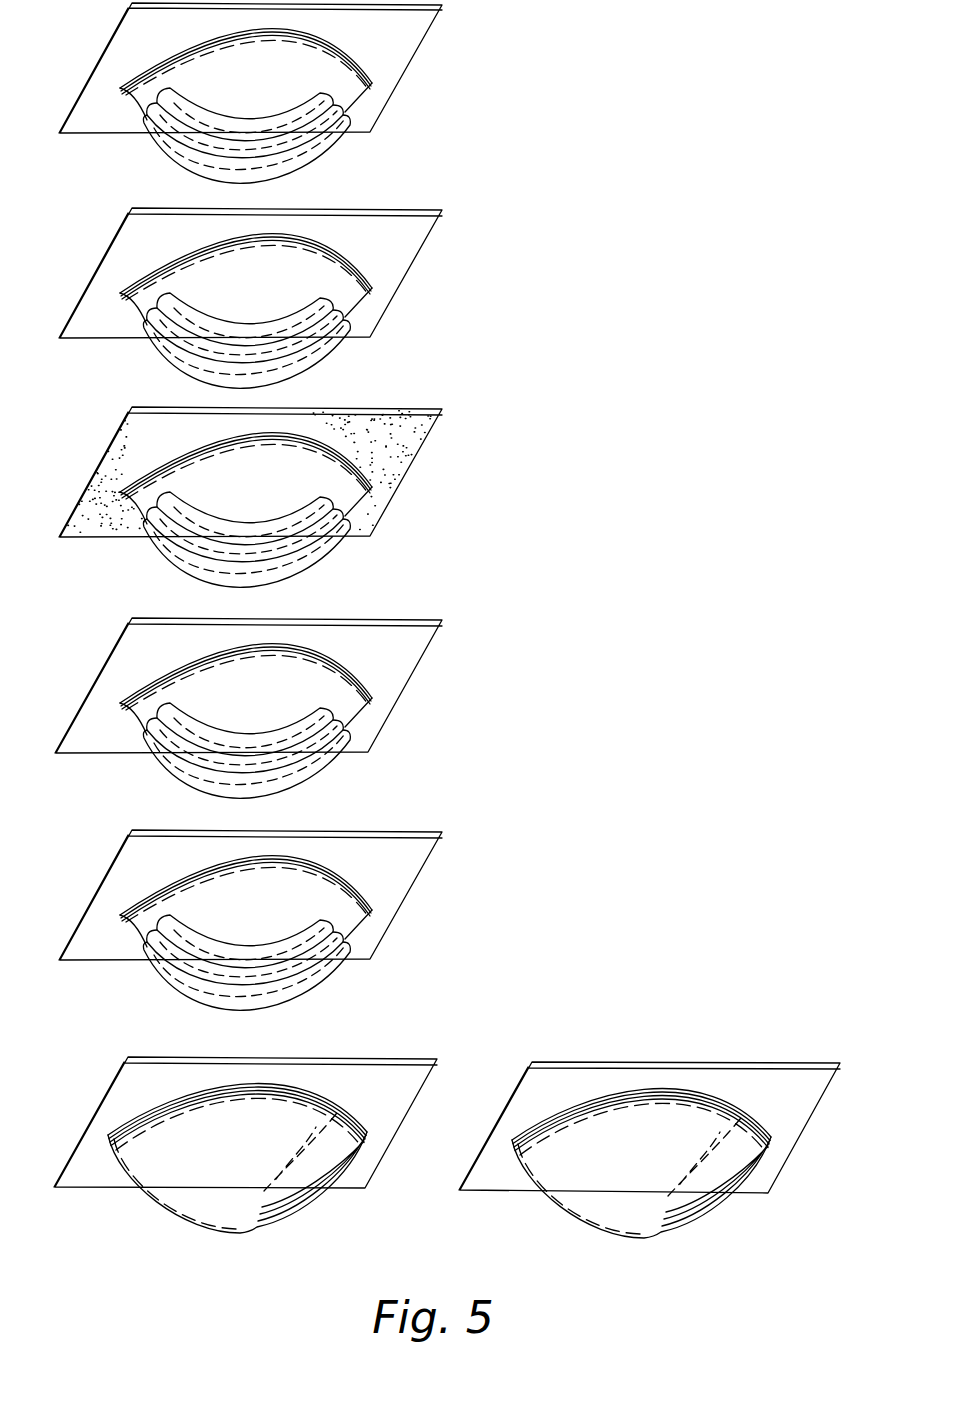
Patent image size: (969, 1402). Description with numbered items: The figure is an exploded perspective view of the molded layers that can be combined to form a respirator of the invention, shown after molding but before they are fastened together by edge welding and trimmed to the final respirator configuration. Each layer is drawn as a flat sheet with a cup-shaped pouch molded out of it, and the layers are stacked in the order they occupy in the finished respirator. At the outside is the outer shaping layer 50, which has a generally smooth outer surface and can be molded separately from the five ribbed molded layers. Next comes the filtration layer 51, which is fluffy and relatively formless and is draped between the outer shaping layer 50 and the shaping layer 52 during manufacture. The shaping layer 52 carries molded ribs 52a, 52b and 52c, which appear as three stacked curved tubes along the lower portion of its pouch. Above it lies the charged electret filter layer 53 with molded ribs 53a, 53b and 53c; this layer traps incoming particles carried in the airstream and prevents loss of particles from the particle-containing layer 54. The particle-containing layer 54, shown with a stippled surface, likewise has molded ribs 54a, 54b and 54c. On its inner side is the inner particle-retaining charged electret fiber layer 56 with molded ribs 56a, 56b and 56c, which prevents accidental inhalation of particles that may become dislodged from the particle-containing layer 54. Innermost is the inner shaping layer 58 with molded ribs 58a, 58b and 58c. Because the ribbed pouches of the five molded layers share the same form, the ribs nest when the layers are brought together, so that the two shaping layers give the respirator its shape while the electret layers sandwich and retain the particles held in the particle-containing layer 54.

The outer shaping layer 50 is at (638, 1064).
The filtration layer 51 is at (427, 1078).
The shaping layer 52 is at (420, 863).
The molded rib 52a is at (297, 983).
The molded rib 52b is at (305, 958).
The molded rib 52c is at (272, 948).
The charged electret filter layer 53 is at (417, 652).
The molded rib 53a is at (292, 773).
The molded rib 53b is at (300, 752).
The molded rib 53c is at (277, 738).
The particle-containing layer 54 is at (418, 449).
The molded rib 54a is at (280, 560).
The molded rib 54b is at (302, 535).
The molded rib 54c is at (285, 518).
The inner particle-retaining charged electret fiber layer 56 is at (415, 242).
The molded rib 56a is at (297, 357).
The molded rib 56b is at (307, 337).
The molded rib 56c is at (290, 320).
The inner shaping layer 58 is at (423, 40).
The molded rib 58a is at (303, 150).
The molded rib 58b is at (308, 128).
The molded rib 58c is at (305, 108).